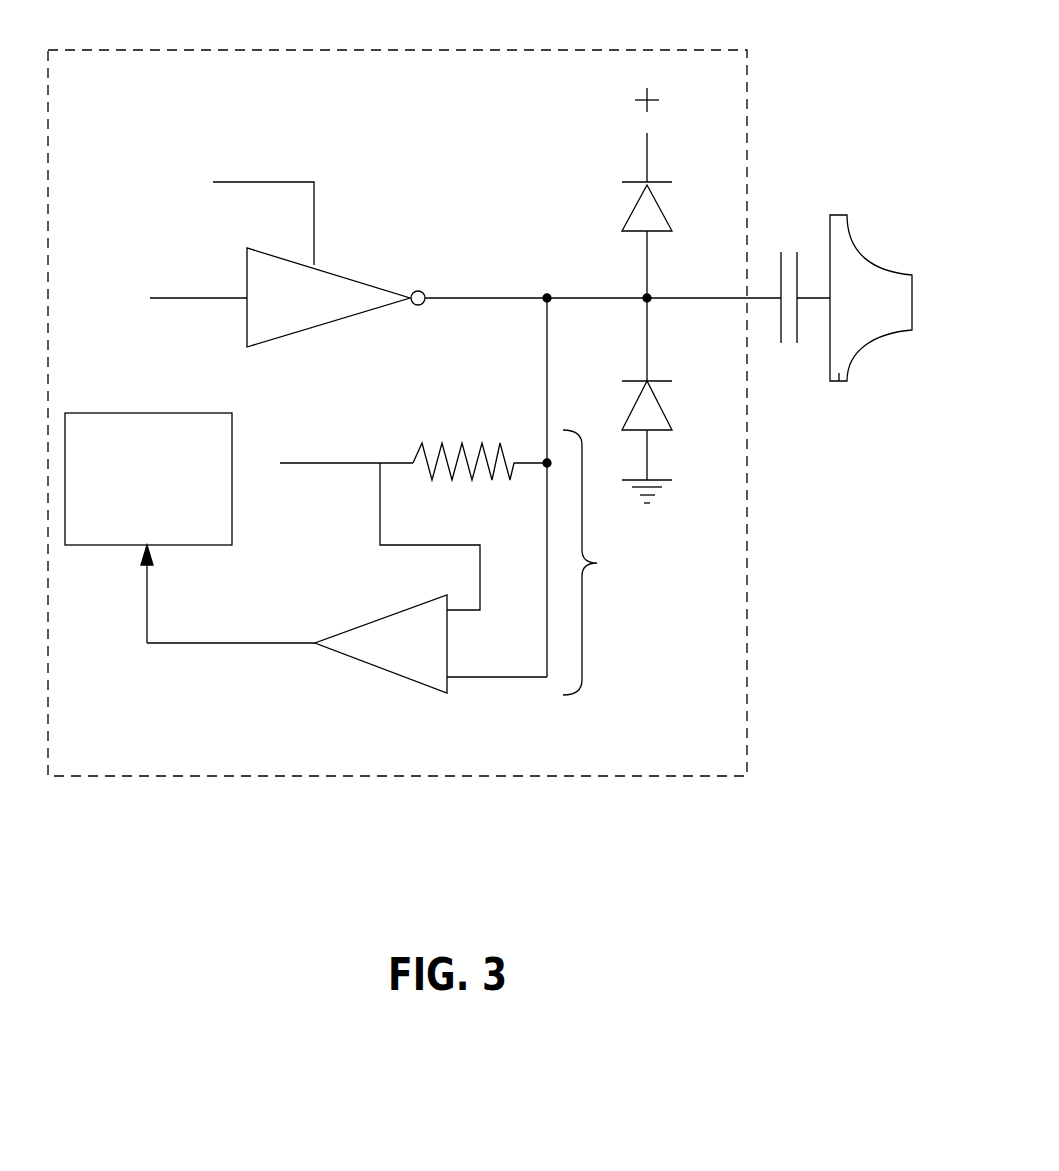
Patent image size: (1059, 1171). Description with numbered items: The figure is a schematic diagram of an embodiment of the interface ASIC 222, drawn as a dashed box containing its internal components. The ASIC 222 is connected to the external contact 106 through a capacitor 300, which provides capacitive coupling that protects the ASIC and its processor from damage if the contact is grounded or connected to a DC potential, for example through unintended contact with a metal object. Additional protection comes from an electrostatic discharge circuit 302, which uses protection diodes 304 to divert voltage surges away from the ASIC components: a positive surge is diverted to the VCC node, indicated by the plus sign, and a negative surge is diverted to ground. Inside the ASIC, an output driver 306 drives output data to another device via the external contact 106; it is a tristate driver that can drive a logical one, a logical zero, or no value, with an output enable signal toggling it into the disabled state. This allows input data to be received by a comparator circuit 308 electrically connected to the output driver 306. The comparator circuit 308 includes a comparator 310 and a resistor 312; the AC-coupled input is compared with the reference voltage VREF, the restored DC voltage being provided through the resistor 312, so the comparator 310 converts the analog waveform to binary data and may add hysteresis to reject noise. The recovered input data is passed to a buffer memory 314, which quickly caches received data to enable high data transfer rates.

The interface ASIC 222 is at (665, 50).
The electrostatic discharge circuit 302 is at (558, 206).
The protection diode 304 is at (655, 222).
The capacitor 300 is at (788, 250).
The external contact 106 is at (839, 376).
The output driver 306 is at (322, 318).
The resistor 312 is at (472, 447).
The comparator circuit 308 is at (599, 496).
The comparator 310 is at (380, 660).
The buffer memory 314 is at (128, 517).